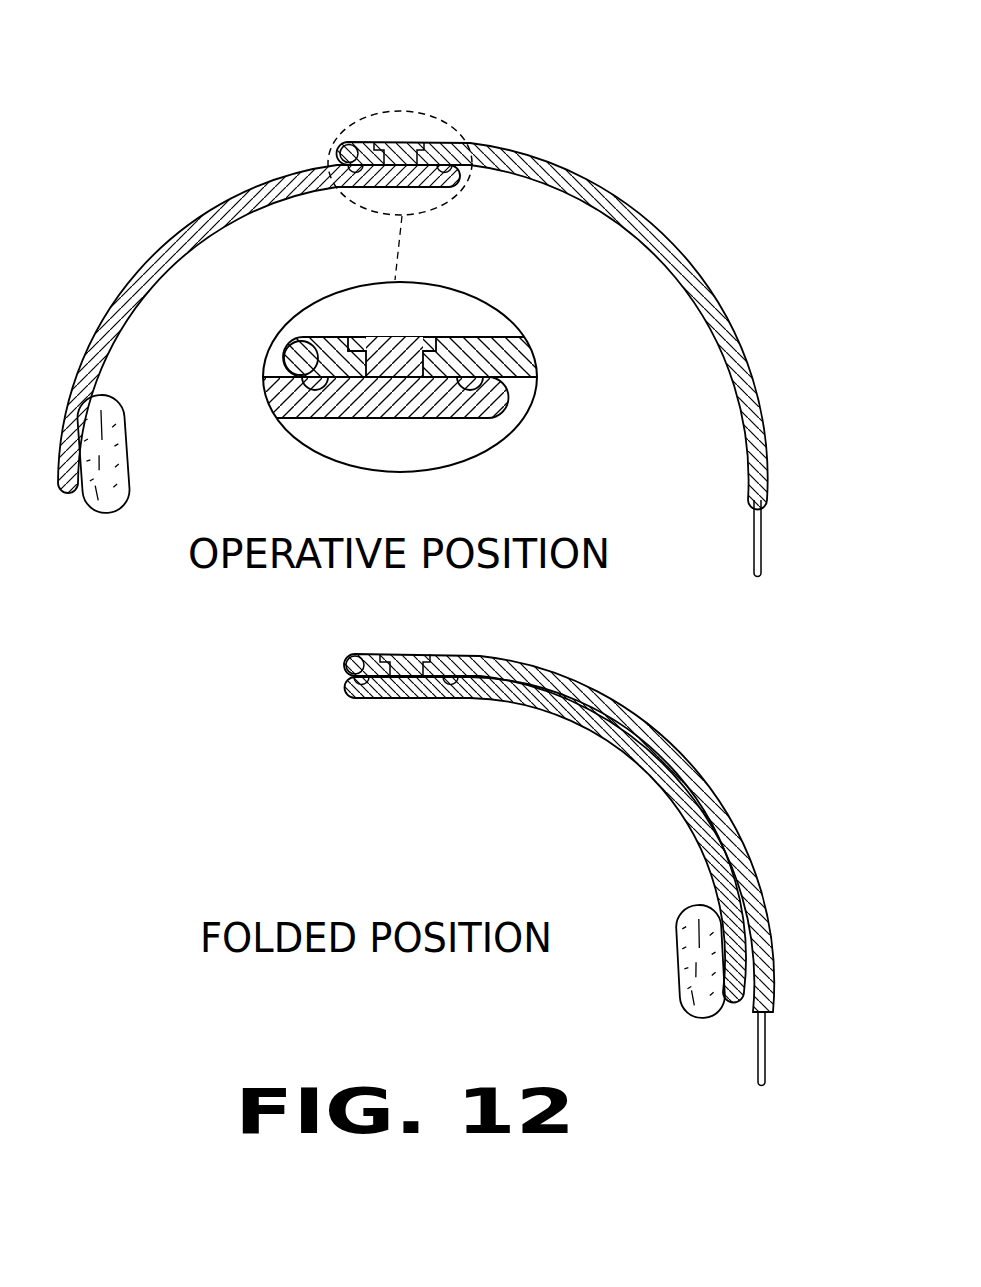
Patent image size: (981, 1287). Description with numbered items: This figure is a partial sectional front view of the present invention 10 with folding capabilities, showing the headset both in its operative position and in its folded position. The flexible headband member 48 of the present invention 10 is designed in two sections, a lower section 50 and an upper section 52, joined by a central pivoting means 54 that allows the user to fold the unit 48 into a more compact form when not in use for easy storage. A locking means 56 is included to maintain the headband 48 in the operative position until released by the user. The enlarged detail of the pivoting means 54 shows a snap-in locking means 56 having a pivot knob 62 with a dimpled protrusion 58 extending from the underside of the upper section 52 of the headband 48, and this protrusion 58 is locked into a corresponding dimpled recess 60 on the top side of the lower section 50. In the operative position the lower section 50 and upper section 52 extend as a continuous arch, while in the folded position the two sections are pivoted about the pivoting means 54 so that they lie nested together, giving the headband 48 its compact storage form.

The present invention 10 is at (714, 221).
The flexible headband member 48 is at (772, 354).
The lower section 50 is at (153, 263).
The upper section 52 is at (596, 190).
The central pivoting means 54 is at (403, 143).
The locking means 56 is at (340, 143).
The dimpled protrusion 58 is at (316, 378).
The dimpled recess 60 is at (462, 392).
The pivot knob 62 is at (413, 340).